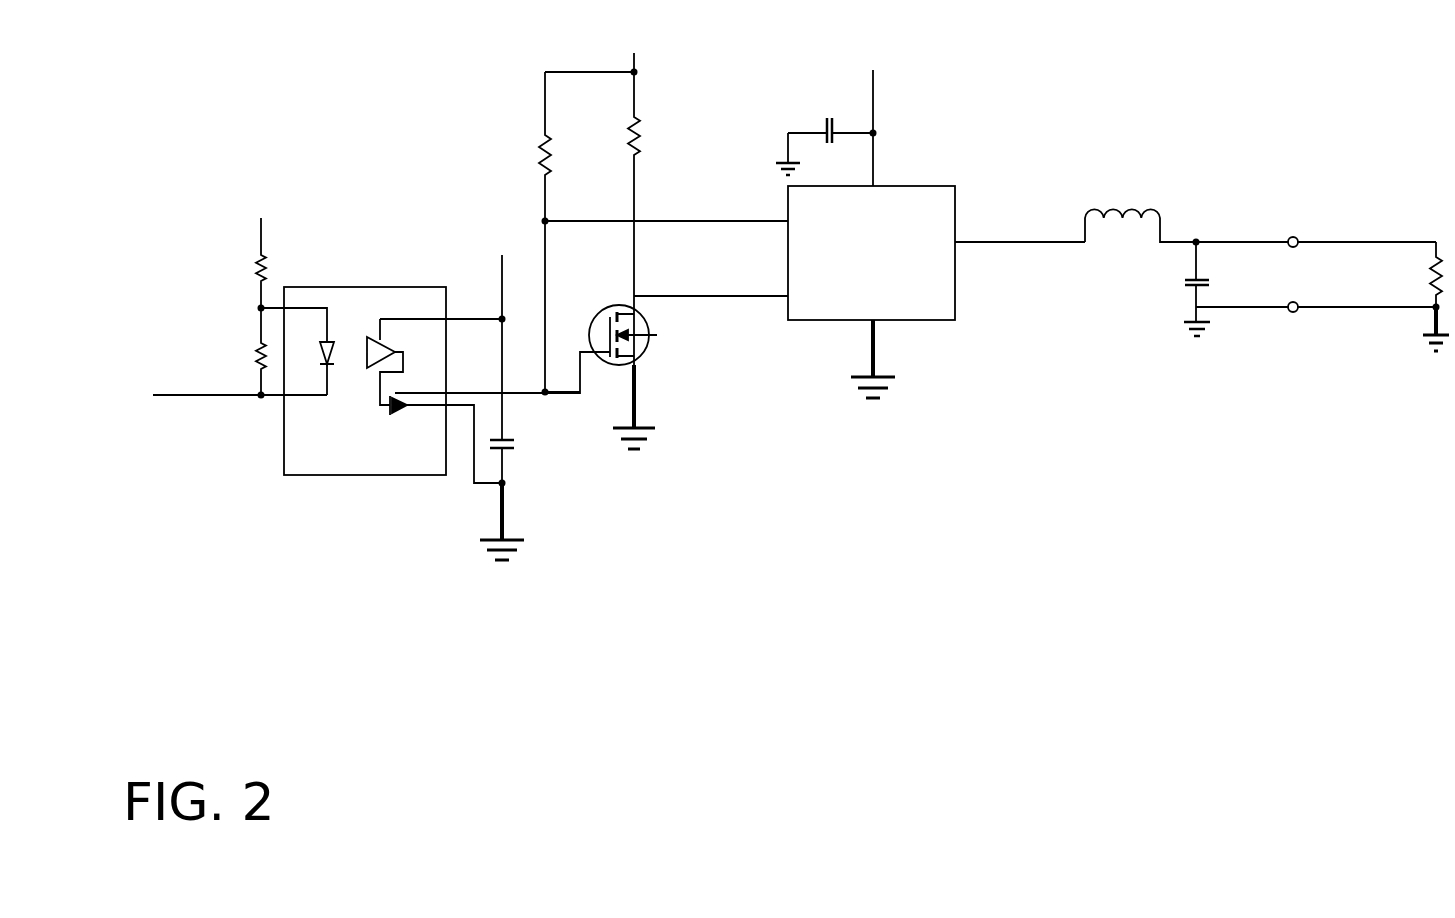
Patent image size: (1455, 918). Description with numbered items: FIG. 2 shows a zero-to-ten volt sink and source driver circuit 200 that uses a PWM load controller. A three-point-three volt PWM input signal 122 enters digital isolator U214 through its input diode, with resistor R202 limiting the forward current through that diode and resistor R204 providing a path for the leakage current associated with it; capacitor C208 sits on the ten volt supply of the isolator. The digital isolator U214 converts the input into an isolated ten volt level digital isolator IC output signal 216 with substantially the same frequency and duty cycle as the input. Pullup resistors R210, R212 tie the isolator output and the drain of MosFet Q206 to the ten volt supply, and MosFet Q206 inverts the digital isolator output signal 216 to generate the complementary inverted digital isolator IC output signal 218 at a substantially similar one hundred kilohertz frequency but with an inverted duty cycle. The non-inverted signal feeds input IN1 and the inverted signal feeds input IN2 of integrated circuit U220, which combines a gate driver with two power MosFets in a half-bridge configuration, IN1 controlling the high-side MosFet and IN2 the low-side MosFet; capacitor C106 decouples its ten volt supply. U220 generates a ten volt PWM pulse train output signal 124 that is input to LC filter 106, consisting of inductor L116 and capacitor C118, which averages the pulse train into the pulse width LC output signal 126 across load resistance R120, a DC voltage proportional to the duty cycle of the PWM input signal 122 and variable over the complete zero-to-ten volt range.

The sink and source driver circuit 200 is at (572, 565).
The PWM input signal 122 is at (204, 395).
The resistor R202 is at (242, 252).
The resistor R204 is at (231, 350).
The digital isolator integrated circuit U214 is at (331, 455).
The capacitor C208 is at (521, 395).
The digital isolator IC output signal 216 is at (565, 393).
The pullup resistor R210 is at (558, 232).
The pullup resistor R212 is at (659, 165).
The MosFet Q206 is at (645, 360).
The inverted digital isolator IC output signal 218 is at (762, 296).
The gate driver and two MosFets integrated circuit U220 is at (853, 268).
The capacitor C106 is at (826, 135).
The pulse train output signal 124 is at (987, 242).
The LC filter 106 is at (1089, 283).
The inductor L116 is at (1140, 235).
The capacitor C118 is at (1174, 288).
The pulse width LC output signal 126 is at (1305, 248).
The load resistance R120 is at (1413, 296).